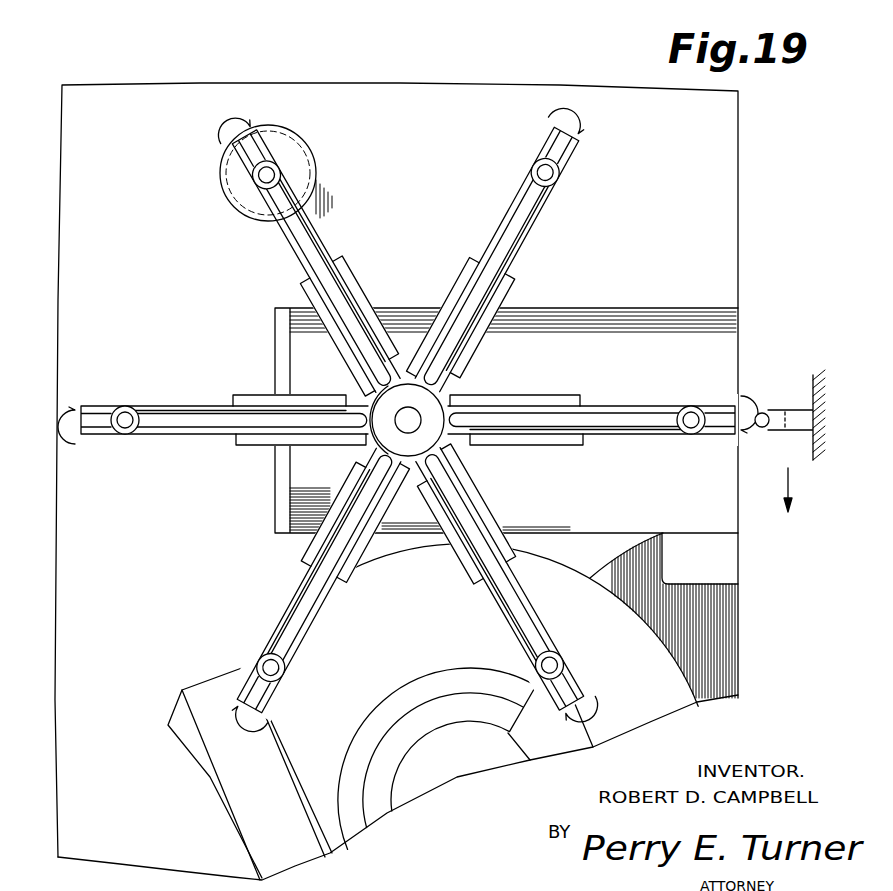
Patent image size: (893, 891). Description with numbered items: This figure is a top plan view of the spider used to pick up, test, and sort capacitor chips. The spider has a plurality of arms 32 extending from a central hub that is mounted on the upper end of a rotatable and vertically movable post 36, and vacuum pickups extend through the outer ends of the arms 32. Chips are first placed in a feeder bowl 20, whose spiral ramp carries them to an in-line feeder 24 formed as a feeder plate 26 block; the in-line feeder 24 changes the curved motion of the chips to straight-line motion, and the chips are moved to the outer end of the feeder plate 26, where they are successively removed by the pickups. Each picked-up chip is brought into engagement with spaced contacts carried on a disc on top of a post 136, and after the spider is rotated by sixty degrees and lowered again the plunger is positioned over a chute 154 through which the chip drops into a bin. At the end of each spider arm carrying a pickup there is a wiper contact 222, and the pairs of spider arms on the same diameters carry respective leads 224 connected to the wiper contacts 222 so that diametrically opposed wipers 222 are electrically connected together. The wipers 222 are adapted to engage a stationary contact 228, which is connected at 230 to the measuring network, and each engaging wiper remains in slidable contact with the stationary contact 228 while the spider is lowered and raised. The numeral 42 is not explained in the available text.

The feeder bowl 20 is at (655, 535).
The in-line feeder 24 is at (250, 845).
The feeder plate 26 is at (245, 808).
The arms 32 is at (305, 392).
The post 36 is at (418, 424).
The spider arm 42 is at (345, 228).
The post 136 is at (136, 438).
The chute 154 is at (316, 162).
The wiper contact 222 is at (228, 115).
The leads 224 is at (477, 262).
The stationary contact 228 is at (762, 430).
The connection to measuring network 230 is at (790, 470).